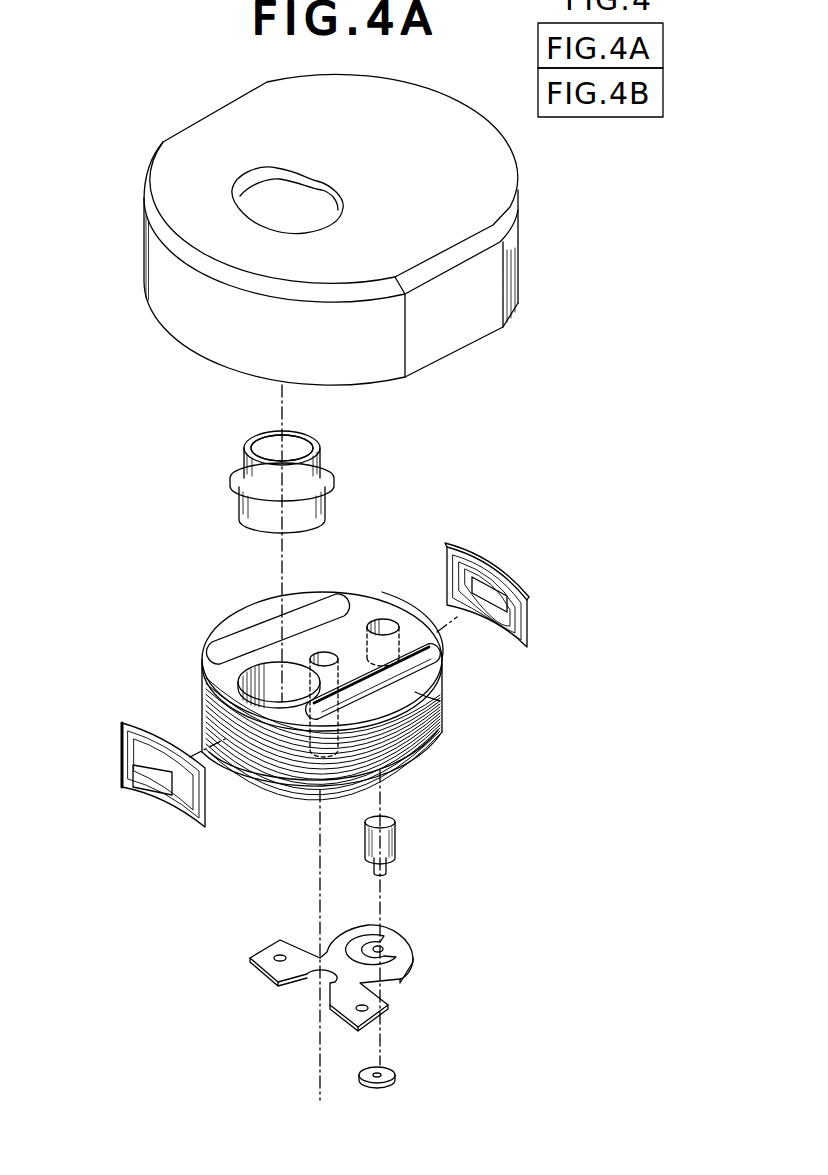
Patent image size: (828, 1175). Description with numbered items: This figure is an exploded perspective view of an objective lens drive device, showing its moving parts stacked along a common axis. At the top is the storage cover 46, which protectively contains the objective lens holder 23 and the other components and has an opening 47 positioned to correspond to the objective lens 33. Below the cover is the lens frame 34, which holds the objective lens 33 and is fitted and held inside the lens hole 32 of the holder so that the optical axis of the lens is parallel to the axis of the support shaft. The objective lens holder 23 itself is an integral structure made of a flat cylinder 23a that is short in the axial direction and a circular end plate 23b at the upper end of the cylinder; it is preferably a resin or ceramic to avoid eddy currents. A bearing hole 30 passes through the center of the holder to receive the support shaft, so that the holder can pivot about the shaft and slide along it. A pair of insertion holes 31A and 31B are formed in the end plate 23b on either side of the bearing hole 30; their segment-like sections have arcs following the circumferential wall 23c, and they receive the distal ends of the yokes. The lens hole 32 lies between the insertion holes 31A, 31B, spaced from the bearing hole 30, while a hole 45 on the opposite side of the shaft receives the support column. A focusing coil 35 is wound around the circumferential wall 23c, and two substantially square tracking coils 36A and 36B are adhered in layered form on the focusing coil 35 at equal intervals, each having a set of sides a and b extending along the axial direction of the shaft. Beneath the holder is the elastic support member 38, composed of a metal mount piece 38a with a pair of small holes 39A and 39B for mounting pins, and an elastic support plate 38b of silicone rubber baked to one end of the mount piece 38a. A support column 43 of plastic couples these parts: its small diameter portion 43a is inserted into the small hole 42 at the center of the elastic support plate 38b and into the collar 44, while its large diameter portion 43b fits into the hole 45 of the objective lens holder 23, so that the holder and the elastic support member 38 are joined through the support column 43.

The objective lens holder 23 is at (328, 688).
The flat cylinder 23a is at (432, 744).
The end plate 23b is at (390, 607).
The circumferential wall 23c is at (425, 716).
The bearing hole 30 is at (365, 757).
The insertion hole 31A is at (404, 668).
The insertion hole 31B is at (250, 633).
The lens hole 32 is at (256, 684).
The objective lens 33 is at (295, 450).
The lens frame 34 is at (237, 443).
The focusing coil 35 is at (283, 745).
The tracking coil 36A is at (520, 580).
The tracking coil 36B is at (158, 797).
The elastic support member 38 is at (336, 973).
The mount piece 38a is at (262, 955).
The elastic support plate 38b is at (342, 930).
The small hole 39A is at (347, 1020).
The small hole 39B is at (262, 970).
The small hole 42 is at (382, 947).
The support column 43 is at (398, 837).
The small diameter portion 43a is at (403, 847).
The large diameter portion 43b is at (372, 842).
The collar 44 is at (394, 1076).
The hole 45 is at (400, 628).
The storage cover 46 is at (167, 180).
The opening 47 is at (260, 213).
The side of tracking coil a is at (527, 624).
The side of tracking coil b is at (443, 567).